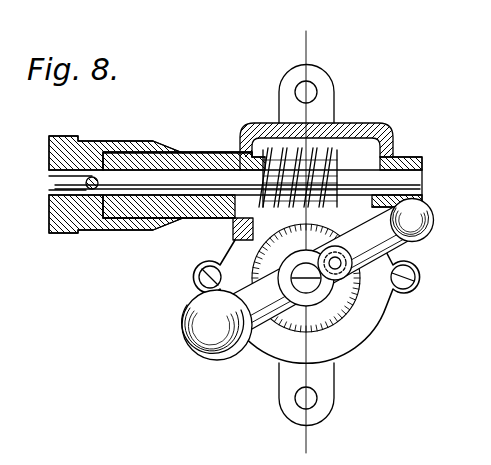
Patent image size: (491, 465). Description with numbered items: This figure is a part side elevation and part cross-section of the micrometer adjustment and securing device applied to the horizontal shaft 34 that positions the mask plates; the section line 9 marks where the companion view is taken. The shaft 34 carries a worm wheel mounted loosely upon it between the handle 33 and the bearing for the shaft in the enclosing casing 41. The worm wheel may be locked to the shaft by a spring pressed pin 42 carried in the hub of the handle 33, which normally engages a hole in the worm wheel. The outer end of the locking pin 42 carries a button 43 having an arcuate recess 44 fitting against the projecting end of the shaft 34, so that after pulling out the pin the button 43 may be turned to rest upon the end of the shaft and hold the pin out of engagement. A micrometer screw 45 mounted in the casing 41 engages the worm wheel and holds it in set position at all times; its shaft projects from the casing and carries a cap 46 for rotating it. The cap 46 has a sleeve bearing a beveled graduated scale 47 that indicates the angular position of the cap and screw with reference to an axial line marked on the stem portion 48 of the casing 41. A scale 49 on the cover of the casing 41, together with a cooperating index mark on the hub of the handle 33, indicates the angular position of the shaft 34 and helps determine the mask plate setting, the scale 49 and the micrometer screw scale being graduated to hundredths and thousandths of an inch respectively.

The section line 9- 9 is at (300, 28).
The handle 33 is at (196, 313).
The horizontal shaft 34 is at (300, 290).
The enclosing casing 41 is at (388, 134).
The spring pressed pin 42 is at (352, 280).
The button 43 is at (392, 293).
The arcuate recess 44 is at (306, 333).
The micrometer screw 45 is at (333, 152).
The cap 46 is at (56, 226).
The beveled graduated scale 47 is at (172, 230).
The stem portion 48 is at (203, 155).
The scale 49 is at (337, 323).